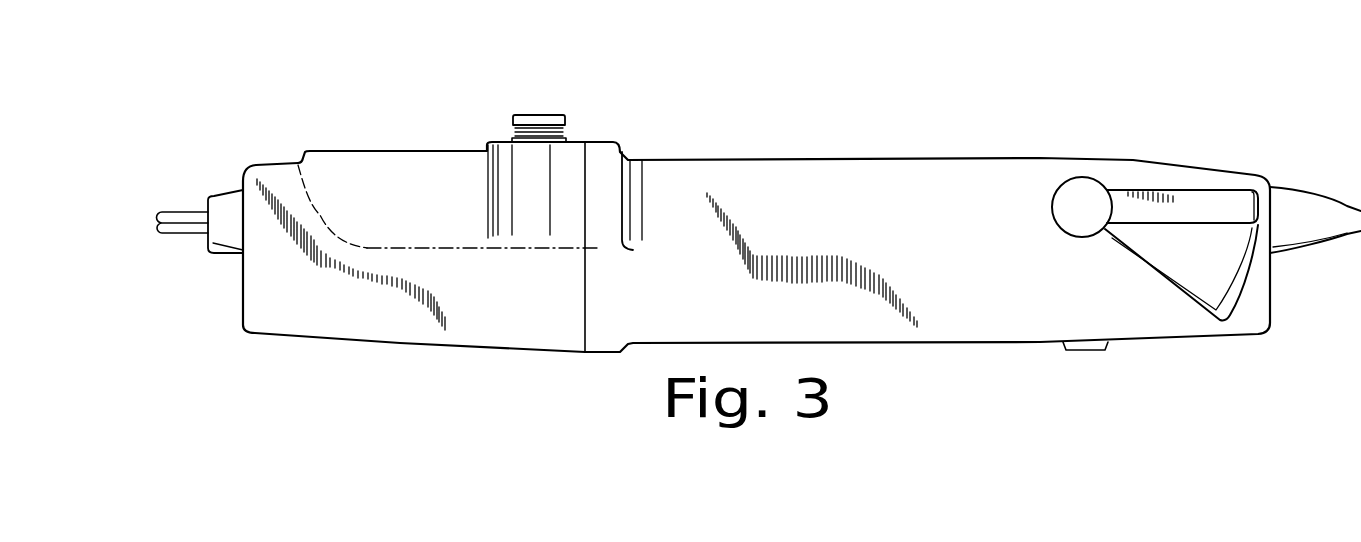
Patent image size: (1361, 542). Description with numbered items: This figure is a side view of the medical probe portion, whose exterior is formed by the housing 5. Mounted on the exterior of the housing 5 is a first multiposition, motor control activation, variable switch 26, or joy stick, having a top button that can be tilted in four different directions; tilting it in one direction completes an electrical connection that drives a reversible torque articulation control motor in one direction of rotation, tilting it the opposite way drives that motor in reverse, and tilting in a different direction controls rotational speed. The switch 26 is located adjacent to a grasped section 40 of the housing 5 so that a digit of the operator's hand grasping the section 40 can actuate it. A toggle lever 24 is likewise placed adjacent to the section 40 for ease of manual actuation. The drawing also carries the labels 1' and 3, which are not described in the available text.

The glue gun housing 1' is at (802, 202).
The electrical plug 3 is at (187, 220).
The multiposition motor control activation variable switch 26 is at (527, 122).
The grasped section 40 is at (673, 177).
The housing 5 is at (727, 187).
The toggle lever 24 is at (1178, 210).